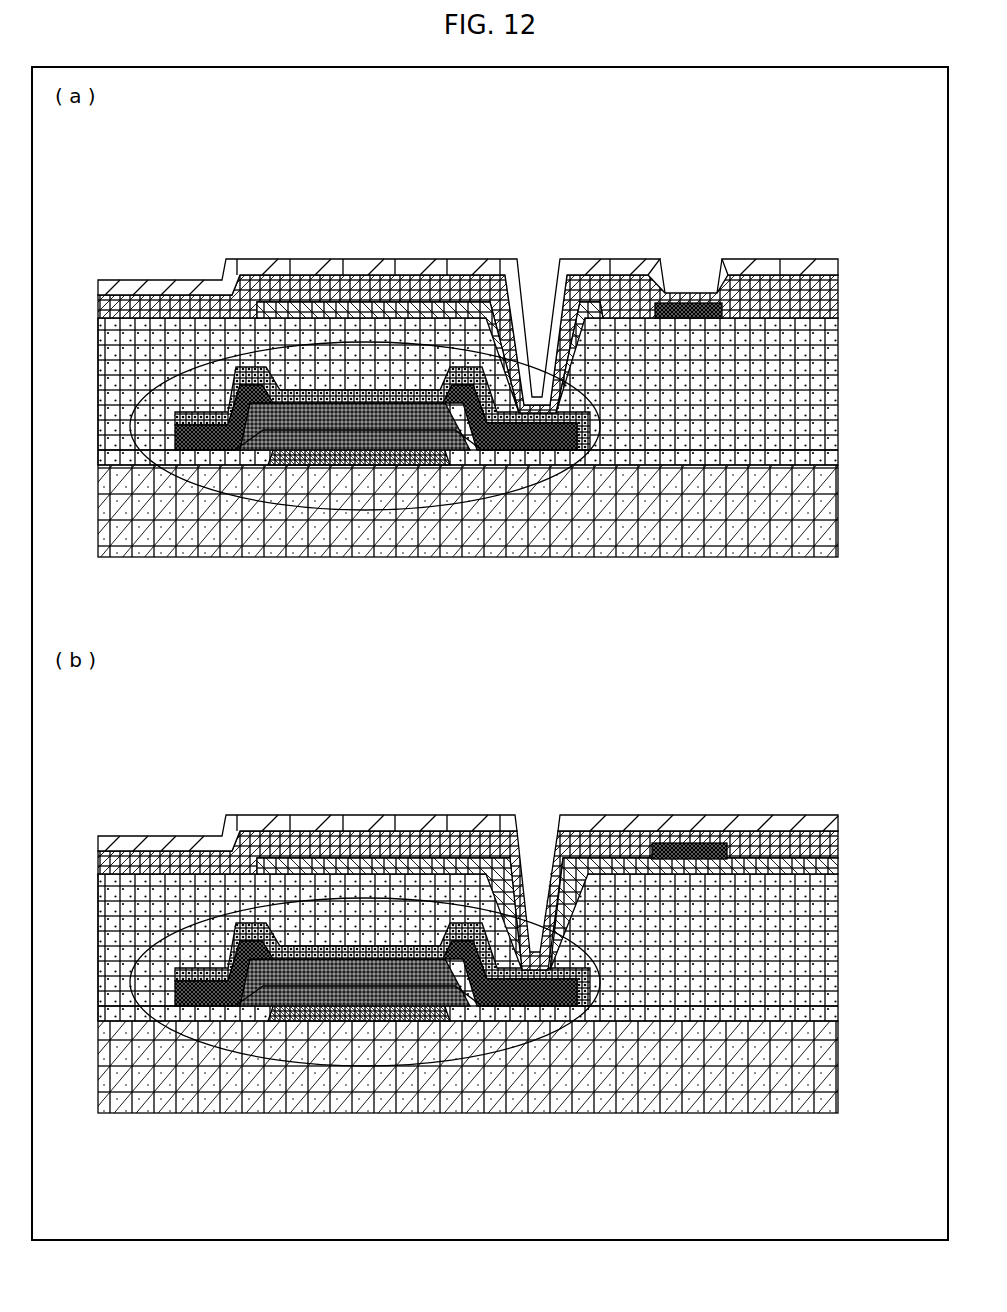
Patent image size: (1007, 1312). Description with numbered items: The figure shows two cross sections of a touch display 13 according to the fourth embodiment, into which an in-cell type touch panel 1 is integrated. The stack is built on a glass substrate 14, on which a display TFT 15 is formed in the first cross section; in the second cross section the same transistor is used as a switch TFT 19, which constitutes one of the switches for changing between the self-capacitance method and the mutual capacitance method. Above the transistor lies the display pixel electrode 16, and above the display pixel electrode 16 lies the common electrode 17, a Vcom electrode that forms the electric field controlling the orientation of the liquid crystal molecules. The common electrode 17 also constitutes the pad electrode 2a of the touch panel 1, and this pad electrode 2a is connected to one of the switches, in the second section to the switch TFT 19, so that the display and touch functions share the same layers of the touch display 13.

The touch panel 1 is at (864, 309).
The pad electrode 2a is at (697, 318).
The touch display 13 is at (817, 221).
The substrate 14 is at (838, 508).
The display TFT 15 is at (514, 491).
The display pixel electrode 16 is at (275, 310).
The common electrode 17 is at (168, 280).
The switch TFT 19 is at (514, 1047).